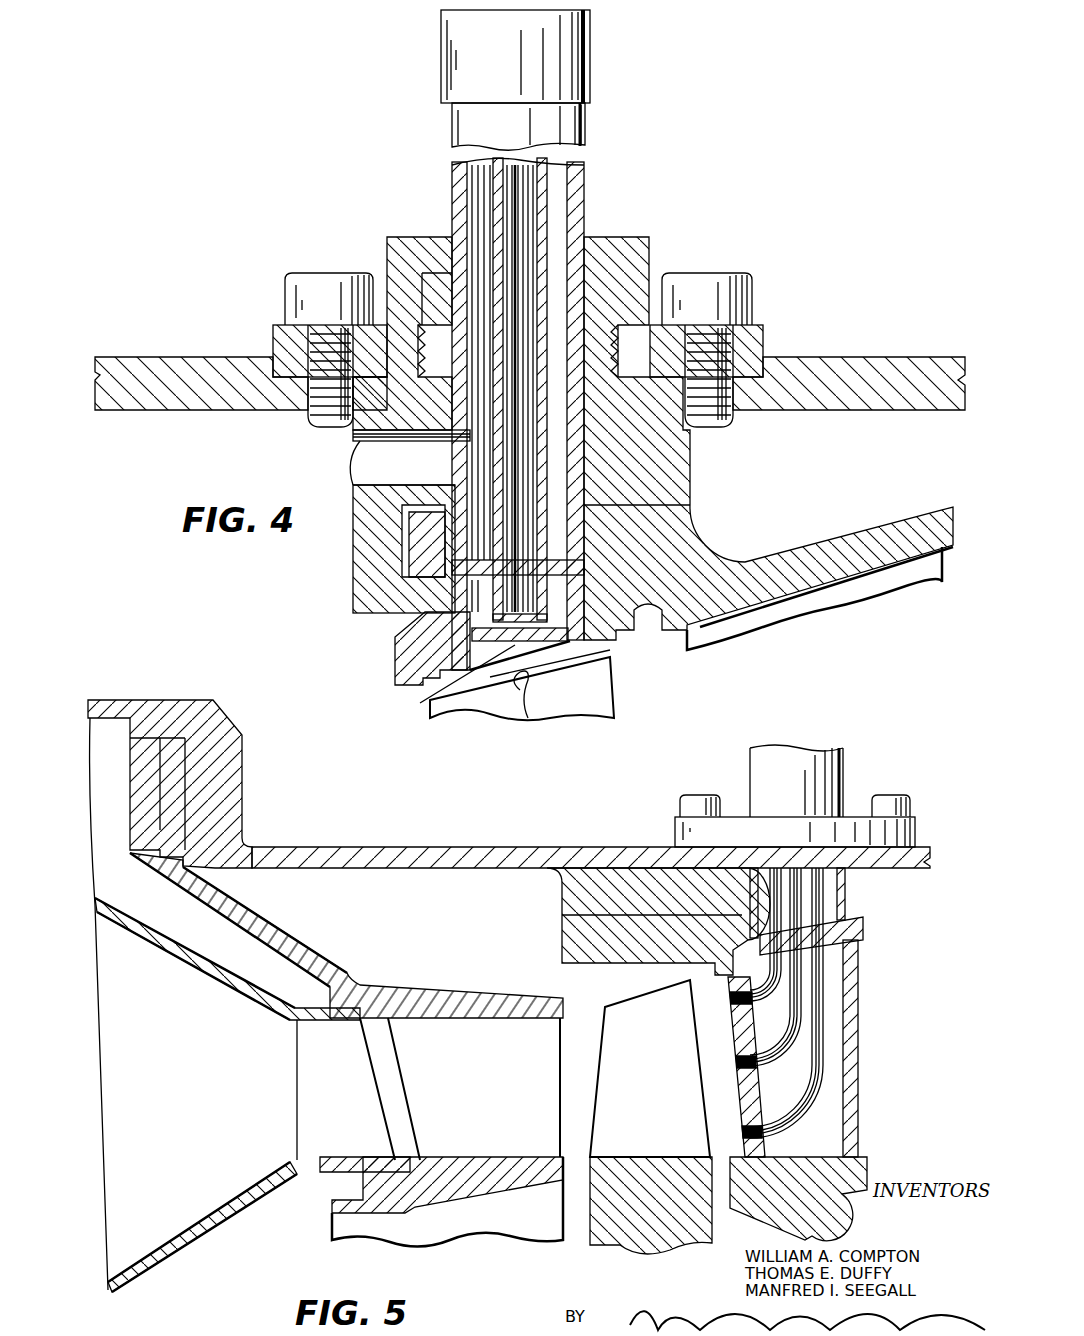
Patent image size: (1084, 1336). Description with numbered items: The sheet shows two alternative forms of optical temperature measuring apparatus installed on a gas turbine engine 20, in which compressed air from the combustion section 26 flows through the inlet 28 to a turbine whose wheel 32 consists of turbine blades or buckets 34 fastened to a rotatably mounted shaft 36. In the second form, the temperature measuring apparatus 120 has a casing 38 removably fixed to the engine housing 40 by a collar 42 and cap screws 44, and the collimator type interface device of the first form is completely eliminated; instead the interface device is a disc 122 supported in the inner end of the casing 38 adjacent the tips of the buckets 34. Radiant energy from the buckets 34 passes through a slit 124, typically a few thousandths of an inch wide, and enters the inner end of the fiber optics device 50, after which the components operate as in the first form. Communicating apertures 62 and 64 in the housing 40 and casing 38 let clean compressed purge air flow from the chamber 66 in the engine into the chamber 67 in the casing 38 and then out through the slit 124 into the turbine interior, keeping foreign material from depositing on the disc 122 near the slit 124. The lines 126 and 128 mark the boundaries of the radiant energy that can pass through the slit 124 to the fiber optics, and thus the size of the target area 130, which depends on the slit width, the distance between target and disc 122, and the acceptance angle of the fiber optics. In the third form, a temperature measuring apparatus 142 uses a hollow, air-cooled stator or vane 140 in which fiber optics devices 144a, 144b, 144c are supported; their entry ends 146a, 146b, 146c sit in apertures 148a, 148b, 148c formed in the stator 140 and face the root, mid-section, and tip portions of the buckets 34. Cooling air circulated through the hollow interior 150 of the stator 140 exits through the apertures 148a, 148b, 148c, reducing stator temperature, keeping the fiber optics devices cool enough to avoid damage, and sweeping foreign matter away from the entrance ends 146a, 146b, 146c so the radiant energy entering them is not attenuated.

In FIG. 5, the gas turbine engine 20 is at (153, 695).
In FIG. 5, the combustion section 26 is at (170, 1080).
In FIG. 5, the inlet 28 is at (565, 985).
In FIG. 5, the wheel 32 is at (598, 1250).
In FIG. 4, the turbine blades or buckets 34 is at (614, 690).
In FIG. 5, the turbine blades or buckets 34 is at (599, 1097).
In FIG. 5, the shaft 36 is at (590, 1218).
In FIG. 4, the casing 38 is at (450, 212).
In FIG. 5, the casing 38 is at (750, 768).
In FIG. 4, the housing 40 is at (135, 357).
In FIG. 5, the housing 40 is at (378, 845).
In FIG. 4, the collar 42 is at (275, 333).
In FIG. 5, the collar 42 is at (676, 832).
In FIG. 4, the cap screws 44 is at (310, 275).
In FIG. 5, the cap screws 44 is at (683, 800).
In FIG. 4, the fiber optics device 50 is at (550, 197).
In FIG. 4, the aperture 62 is at (350, 438).
In FIG. 4, the aperture 64 is at (470, 478).
In FIG. 4, the chamber 66 is at (166, 443).
In FIG. 4, the chamber 67 is at (565, 487).
In FIG. 4, the temperature measuring apparatus 120 is at (398, 168).
In FIG. 4, the disc 122 is at (420, 643).
In FIG. 4, the slit 124 is at (522, 647).
In FIG. 4, the boundary of radiant energy 126 is at (445, 688).
In FIG. 4, the boundary of radiant energy 128 is at (568, 668).
In FIG. 4, the target area 130 is at (526, 718).
In FIG. 5, the stator or vane 140 is at (856, 987).
In FIG. 5, the temperature measuring apparatus 142 is at (850, 765).
In FIG. 5, the fiber optics device 144a is at (822, 960).
In FIG. 5, the fiber optics device 144b is at (800, 912).
In FIG. 5, the fiber optics device 144c is at (780, 890).
In FIG. 5, the entry end 146a is at (745, 1136).
In FIG. 5, the entry end 146b is at (740, 1070).
In FIG. 5, the entry end 146c is at (733, 1008).
In FIG. 5, the aperture 148a is at (760, 1133).
In FIG. 5, the aperture 148b is at (757, 1070).
In FIG. 5, the aperture 148c is at (763, 1009).
In FIG. 5, the hollow interior 150 is at (838, 1008).